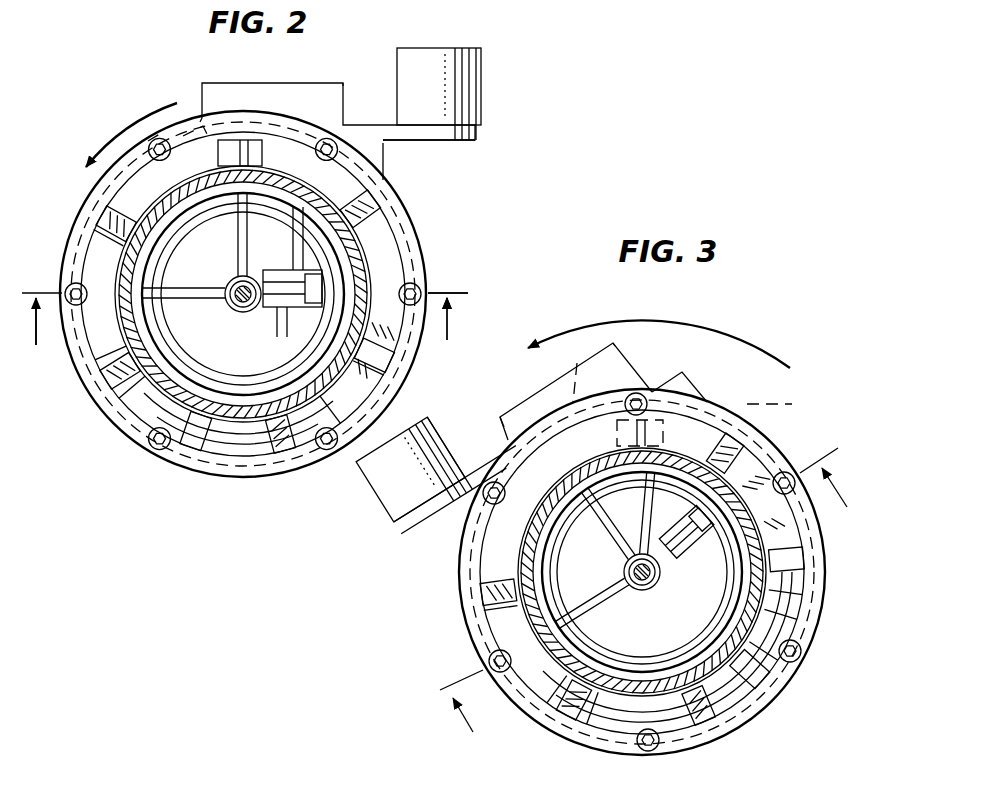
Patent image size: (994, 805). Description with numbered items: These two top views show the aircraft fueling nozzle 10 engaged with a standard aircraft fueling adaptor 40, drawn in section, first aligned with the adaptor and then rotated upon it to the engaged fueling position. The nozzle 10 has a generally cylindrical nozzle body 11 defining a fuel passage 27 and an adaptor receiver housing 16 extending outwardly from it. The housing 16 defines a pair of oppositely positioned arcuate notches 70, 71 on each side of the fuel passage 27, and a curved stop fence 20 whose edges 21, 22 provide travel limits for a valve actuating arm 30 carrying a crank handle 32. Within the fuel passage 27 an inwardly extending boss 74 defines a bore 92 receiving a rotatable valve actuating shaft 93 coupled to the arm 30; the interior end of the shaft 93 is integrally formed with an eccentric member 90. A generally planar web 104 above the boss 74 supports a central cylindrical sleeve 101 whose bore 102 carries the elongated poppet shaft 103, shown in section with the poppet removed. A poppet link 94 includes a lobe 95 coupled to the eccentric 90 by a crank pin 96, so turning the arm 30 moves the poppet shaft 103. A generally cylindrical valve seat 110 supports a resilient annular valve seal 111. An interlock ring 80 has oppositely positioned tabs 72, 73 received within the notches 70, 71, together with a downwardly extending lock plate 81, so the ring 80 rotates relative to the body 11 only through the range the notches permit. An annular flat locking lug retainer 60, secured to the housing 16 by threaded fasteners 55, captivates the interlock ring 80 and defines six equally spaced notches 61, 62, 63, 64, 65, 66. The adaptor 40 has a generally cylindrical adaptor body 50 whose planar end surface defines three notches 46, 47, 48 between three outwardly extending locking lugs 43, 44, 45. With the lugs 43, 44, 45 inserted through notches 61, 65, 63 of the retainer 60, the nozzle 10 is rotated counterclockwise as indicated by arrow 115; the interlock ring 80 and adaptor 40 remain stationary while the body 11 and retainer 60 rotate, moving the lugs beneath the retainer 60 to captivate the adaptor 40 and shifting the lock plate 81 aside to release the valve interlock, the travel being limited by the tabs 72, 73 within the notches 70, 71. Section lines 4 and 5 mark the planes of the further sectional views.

In FIG. 2, the aircraft fueling nozzle 10 is at (494, 195).
In FIG. 3, the aircraft fueling nozzle 10 is at (820, 361).
In FIG. 2, the nozzle body 11 is at (260, 294).
In FIG. 3, the nozzle body 11 is at (642, 552).
In FIG. 3, the adaptor receiver housing 16 is at (771, 410).
In FIG. 2, the stop fence 20 is at (338, 116).
In FIG. 3, the stop fence 20 is at (576, 391).
In FIG. 2, the edge of stop fence 21 is at (177, 92).
In FIG. 3, the edge of stop fence 21 is at (500, 400).
In FIG. 2, the edge of stop fence 22 is at (337, 69).
In FIG. 3, the edge of stop fence 22 is at (636, 346).
In FIG. 2, the fuel passage 27 is at (88, 378).
In FIG. 3, the fuel passage 27 is at (579, 738).
In FIG. 2, the valve actuating arm 30 is at (449, 150).
In FIG. 3, the valve actuating arm 30 is at (439, 504).
In FIG. 2, the crank handle 32 is at (455, 94).
In FIG. 3, the crank handle 32 is at (414, 464).
In FIG. 3, the fueling adaptor 40 is at (815, 588).
In FIG. 2, the locking lug 43 is at (243, 255).
In FIG. 3, the locking lug 43 is at (642, 535).
In FIG. 2, the locking lug 44 is at (397, 379).
In FIG. 3, the locking lug 44 is at (809, 612).
In FIG. 2, the locking lug 45 is at (94, 384).
In FIG. 3, the locking lug 45 is at (500, 667).
In FIG. 2, the notch 46 is at (264, 294).
In FIG. 3, the notch 46 is at (643, 572).
In FIG. 2, the notch 47 is at (238, 449).
In FIG. 3, the notch 47 is at (662, 678).
In FIG. 2, the notch 48 is at (75, 222).
In FIG. 3, the notch 48 is at (473, 567).
In FIG. 2, the adaptor body 50 is at (330, 444).
In FIG. 2, the threaded fasteners 55 is at (283, 293).
In FIG. 3, the threaded fasteners 55 is at (611, 572).
In FIG. 2, the locking lug retainer 60 is at (206, 458).
In FIG. 3, the locking lug retainer 60 is at (597, 647).
In FIG. 2, the lug notch 61 is at (240, 127).
In FIG. 3, the lug notch 61 is at (567, 435).
In FIG. 2, the lug notch 62 is at (82, 218).
In FIG. 3, the lug notch 62 is at (456, 603).
In FIG. 2, the lug notch 63 is at (98, 392).
In FIG. 3, the lug notch 63 is at (538, 728).
In FIG. 2, the lug notch 64 is at (262, 460).
In FIG. 3, the lug notch 64 is at (722, 724).
In FIG. 2, the lug notch 65 is at (397, 358).
In FIG. 3, the lug notch 65 is at (816, 559).
In FIG. 2, the lug notch 66 is at (385, 204).
In FIG. 3, the lug notch 66 is at (739, 434).
In FIG. 3, the arcuate notch 70 is at (792, 678).
In FIG. 2, the arcuate notch 71 is at (153, 125).
In FIG. 3, the arcuate notch 71 is at (564, 374).
In FIG. 2, the tab 72 is at (280, 462).
In FIG. 3, the tab 72 is at (689, 737).
In FIG. 2, the tab 73 is at (192, 115).
In FIG. 3, the tab 73 is at (679, 371).
In FIG. 2, the boss 74 is at (243, 294).
In FIG. 3, the boss 74 is at (642, 572).
In FIG. 2, the interlock ring 80 is at (186, 458).
In FIG. 3, the interlock ring 80 is at (765, 693).
In FIG. 2, the lock plate 81 is at (223, 294).
In FIG. 3, the lock plate 81 is at (642, 572).
In FIG. 2, the eccentric member 90 is at (294, 302).
In FIG. 3, the eccentric member 90 is at (694, 546).
In FIG. 2, the bore 92 is at (278, 334).
In FIG. 2, the valve actuating shaft 93 is at (243, 294).
In FIG. 3, the valve actuating shaft 93 is at (642, 572).
In FIG. 2, the poppet link 94 is at (183, 312).
In FIG. 3, the poppet link 94 is at (592, 612).
In FIG. 2, the lobe 95 is at (354, 235).
In FIG. 3, the lobe 95 is at (648, 542).
In FIG. 2, the crank pin 96 is at (254, 314).
In FIG. 3, the crank pin 96 is at (664, 584).
In FIG. 2, the sleeve 101 is at (254, 335).
In FIG. 3, the sleeve 101 is at (637, 607).
In FIG. 2, the bore 102 is at (234, 331).
In FIG. 3, the bore 102 is at (662, 601).
In FIG. 2, the poppet shaft 103 is at (222, 318).
In FIG. 3, the poppet shaft 103 is at (613, 572).
In FIG. 2, the web 104 is at (243, 294).
In FIG. 3, the web 104 is at (642, 572).
In FIG. 2, the valve seat 110 is at (387, 328).
In FIG. 3, the valve seat 110 is at (793, 456).
In FIG. 2, the valve seal 111 is at (381, 360).
In FIG. 3, the valve seal 111 is at (809, 527).
In FIG. 2, the arrow 115 is at (131, 124).
In FIG. 3, the arrow 115 is at (659, 329).
In FIG. 2, the section line 4- 4 is at (245, 330).
In FIG. 3, the section line 5- 5 is at (652, 601).